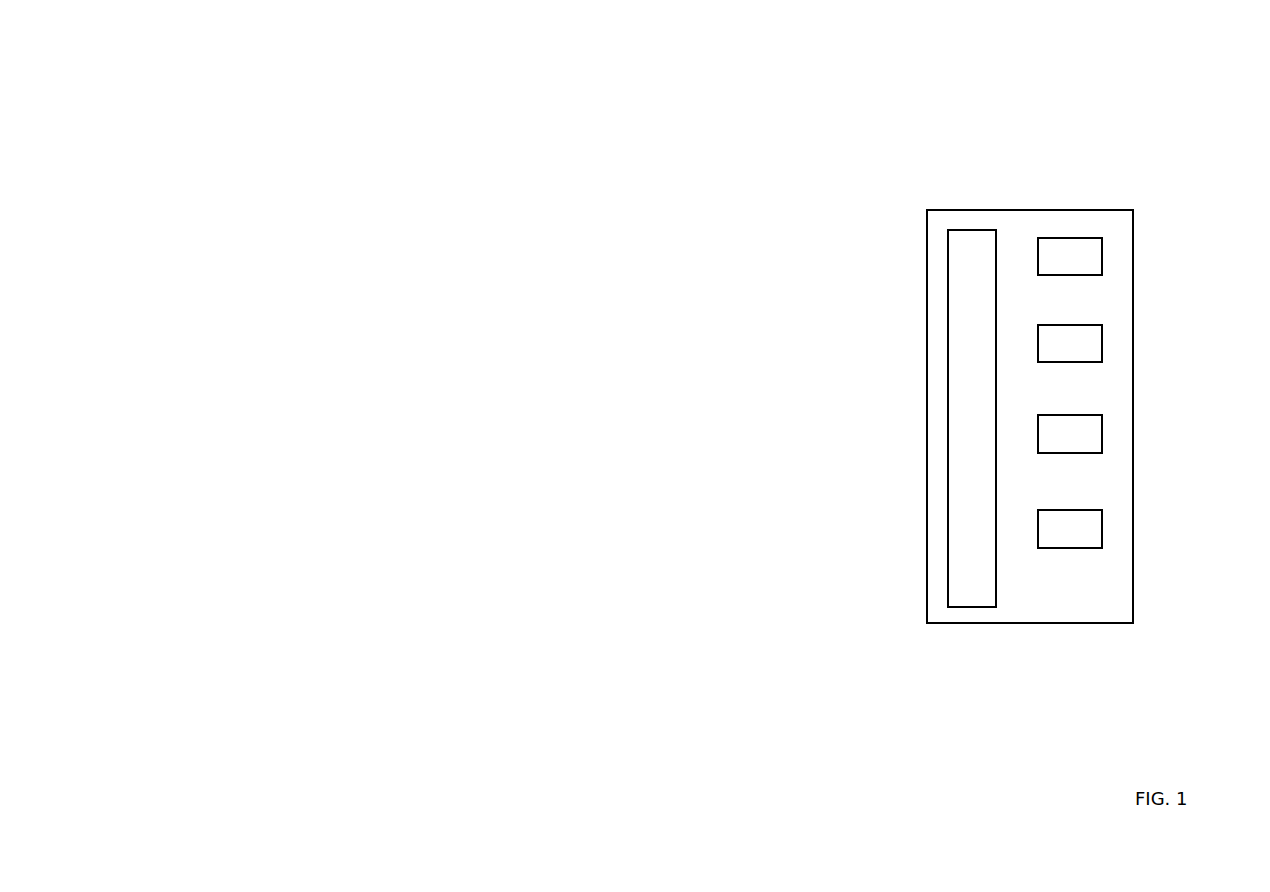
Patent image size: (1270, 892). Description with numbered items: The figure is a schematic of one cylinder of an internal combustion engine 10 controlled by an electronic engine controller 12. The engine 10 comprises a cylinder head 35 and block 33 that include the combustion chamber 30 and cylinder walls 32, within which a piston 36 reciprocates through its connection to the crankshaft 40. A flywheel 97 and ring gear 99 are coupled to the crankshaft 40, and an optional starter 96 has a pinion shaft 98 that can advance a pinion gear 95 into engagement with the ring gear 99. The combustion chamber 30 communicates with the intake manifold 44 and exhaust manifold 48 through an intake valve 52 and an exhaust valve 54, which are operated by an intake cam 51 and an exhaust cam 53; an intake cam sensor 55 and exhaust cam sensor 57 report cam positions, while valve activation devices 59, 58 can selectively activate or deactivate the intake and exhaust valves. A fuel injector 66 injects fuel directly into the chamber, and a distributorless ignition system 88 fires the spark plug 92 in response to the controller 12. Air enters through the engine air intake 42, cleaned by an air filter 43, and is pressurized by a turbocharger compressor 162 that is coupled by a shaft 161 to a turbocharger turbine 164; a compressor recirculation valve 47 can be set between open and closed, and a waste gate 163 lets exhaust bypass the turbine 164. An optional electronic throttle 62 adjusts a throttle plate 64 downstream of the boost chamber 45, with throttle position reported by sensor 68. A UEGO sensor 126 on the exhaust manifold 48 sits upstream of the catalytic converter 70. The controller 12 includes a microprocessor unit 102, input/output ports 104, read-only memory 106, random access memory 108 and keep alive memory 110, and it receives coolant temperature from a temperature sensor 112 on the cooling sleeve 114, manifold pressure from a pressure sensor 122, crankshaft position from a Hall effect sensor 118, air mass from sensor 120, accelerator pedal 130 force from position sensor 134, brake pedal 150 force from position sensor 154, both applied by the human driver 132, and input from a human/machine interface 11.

The internal combustion engine 10 is at (275, 283).
The human/machine interface 11 is at (850, 550).
The electronic engine controller 12 is at (1133, 210).
The combustion chamber 30 is at (425, 415).
The cylinder walls 32 is at (370, 548).
The block 33 is at (330, 455).
The cylinder head 35 is at (332, 322).
The piston 36 is at (408, 520).
The crankshaft 40 is at (430, 610).
The engine air intake 42 is at (615, 255).
The air filter 43 is at (750, 252).
The intake manifold 44 is at (538, 387).
The boost chamber 45 is at (629, 387).
The compressor recirculation valve 47 is at (660, 288).
The exhaust manifold 48 is at (317, 395).
The intake cam 51 is at (480, 298).
The intake valve 52 is at (462, 380).
The exhaust cam 53 is at (370, 298).
The exhaust valve 54 is at (340, 358).
The intake cam sensor 55 is at (500, 320).
The exhaust cam sensor 57 is at (352, 308).
The valve activation device 58 is at (375, 310).
The valve activation device 59 is at (478, 310).
The electronic throttle 62 is at (575, 362).
The throttle plate 64 is at (560, 390).
The fuel injector 66 is at (522, 438).
The throttle position sensor 68 is at (512, 345).
The catalytic converter 70 is at (758, 748).
The distributorless ignition system 88 is at (383, 158).
The spark plug 92 is at (432, 315).
The pinion gear 95 is at (472, 652).
The starter 96 is at (482, 650).
The flywheel 97 is at (420, 600).
The pinion shaft 98 is at (462, 650).
The ring gear 99 is at (440, 632).
The microprocessor unit 102 is at (1102, 345).
The input/output ports 104 is at (996, 237).
The read-only memory 106 is at (1102, 255).
The random access memory 108 is at (1102, 435).
The keep alive memory 110 is at (671, 463).
The temperature sensor 112 is at (547, 480).
The cooling sleeve 114 is at (497, 505).
The Hall effect sensor 118 is at (484, 592).
The air mass sensor 120 is at (768, 360).
The pressure sensor 122 is at (605, 410).
The Universal Exhaust Gas Oxygen sensor 126 is at (187, 445).
The accelerator pedal 130 is at (1040, 118).
The human driver 132 is at (1095, 100).
The position sensor 134 is at (1075, 130).
The brake pedal 150 is at (1062, 740).
The position sensor 154 is at (1030, 685).
The shaft 161 is at (660, 432).
The turbocharger compressor 162 is at (683, 400).
The waste gate 163 is at (667, 830).
The turbocharger turbine 164 is at (655, 748).